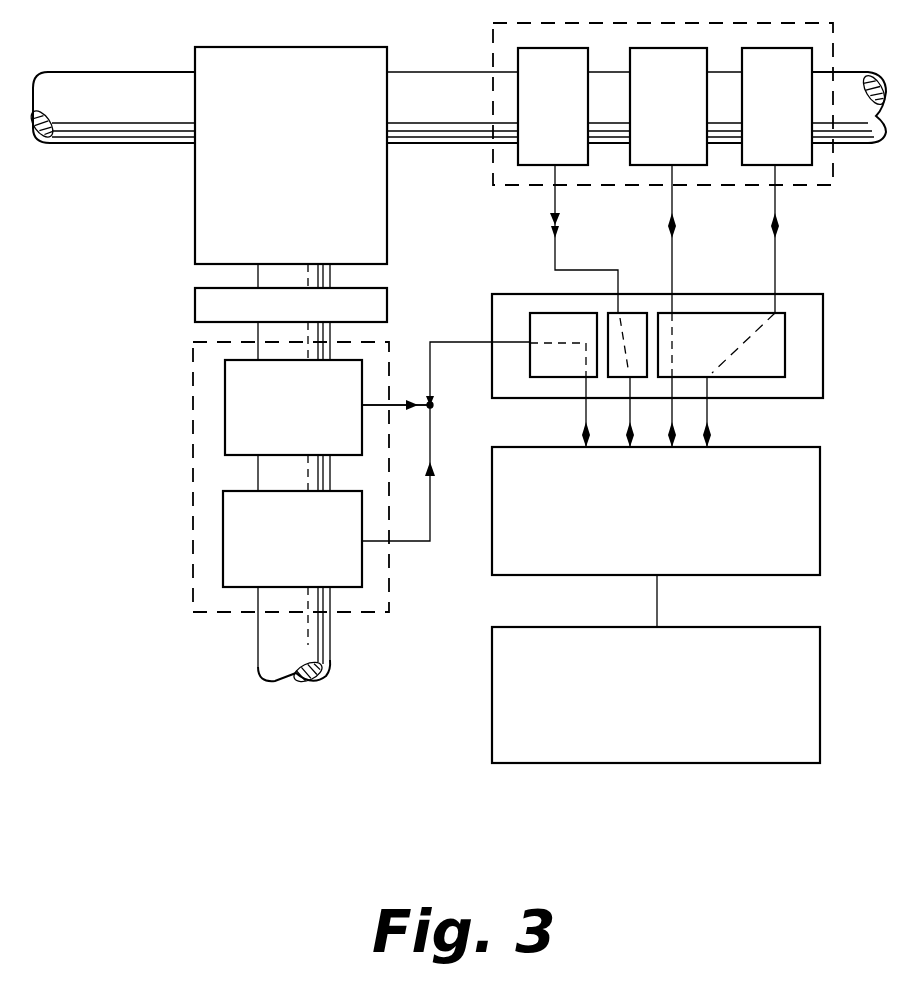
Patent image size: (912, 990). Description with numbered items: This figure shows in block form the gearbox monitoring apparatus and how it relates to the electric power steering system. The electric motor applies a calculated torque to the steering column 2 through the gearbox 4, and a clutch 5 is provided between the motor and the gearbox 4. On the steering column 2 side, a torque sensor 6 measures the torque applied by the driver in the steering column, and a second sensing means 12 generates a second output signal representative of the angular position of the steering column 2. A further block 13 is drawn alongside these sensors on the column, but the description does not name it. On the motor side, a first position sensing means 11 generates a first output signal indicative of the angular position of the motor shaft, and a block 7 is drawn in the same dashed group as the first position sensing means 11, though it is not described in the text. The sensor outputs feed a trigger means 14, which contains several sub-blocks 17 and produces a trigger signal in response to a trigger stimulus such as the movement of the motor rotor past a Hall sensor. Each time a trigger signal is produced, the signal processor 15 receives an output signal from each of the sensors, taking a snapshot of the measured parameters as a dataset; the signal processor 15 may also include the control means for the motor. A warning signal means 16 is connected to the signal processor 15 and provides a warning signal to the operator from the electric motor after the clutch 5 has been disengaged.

The steering column 2 is at (120, 115).
The gearbox 4 is at (300, 167).
The clutch 5 is at (302, 318).
The torque sensor 6 is at (562, 118).
The current measuring device 7 is at (302, 553).
The first position sensing means 11 is at (304, 422).
The second sensing means 12 is at (792, 118).
The sensor 13 is at (684, 118).
The trigger means 14 is at (807, 303).
The signal processor 15 is at (673, 515).
The warning signal means 16 is at (666, 700).
The converter 17 is at (632, 313).